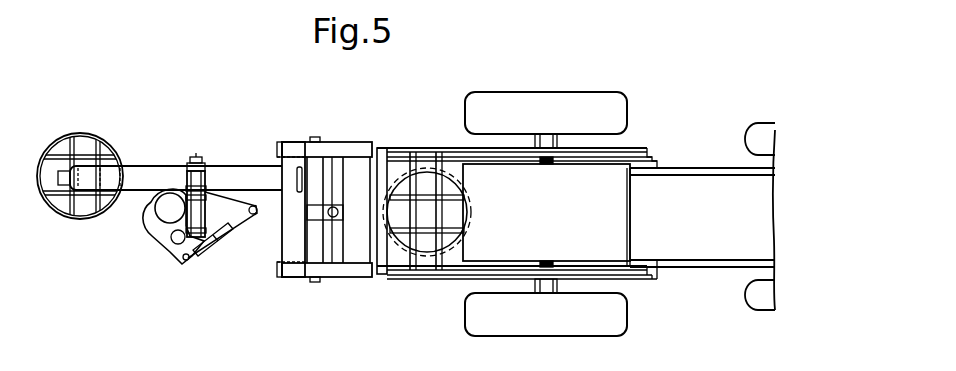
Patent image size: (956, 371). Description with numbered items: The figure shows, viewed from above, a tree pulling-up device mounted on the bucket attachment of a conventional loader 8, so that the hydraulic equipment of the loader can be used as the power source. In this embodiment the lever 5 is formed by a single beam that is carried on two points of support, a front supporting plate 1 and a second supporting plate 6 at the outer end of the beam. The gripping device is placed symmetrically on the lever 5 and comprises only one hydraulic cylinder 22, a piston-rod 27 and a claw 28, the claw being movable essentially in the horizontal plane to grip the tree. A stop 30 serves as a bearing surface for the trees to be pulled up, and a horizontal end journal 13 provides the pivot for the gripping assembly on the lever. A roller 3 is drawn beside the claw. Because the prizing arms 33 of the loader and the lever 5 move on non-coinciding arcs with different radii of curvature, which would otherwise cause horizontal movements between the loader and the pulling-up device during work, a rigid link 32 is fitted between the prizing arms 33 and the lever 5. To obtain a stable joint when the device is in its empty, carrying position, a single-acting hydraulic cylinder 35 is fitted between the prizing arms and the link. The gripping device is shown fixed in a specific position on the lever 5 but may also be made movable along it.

The supporting plate 1 is at (403, 215).
The roller 3 is at (170, 218).
The lever 5 is at (226, 166).
The supporting plate 6 is at (86, 218).
The loader 8 is at (562, 219).
The end journal 13 is at (197, 153).
The hydraulic cylinder 22 is at (229, 226).
The piston-rod 27 is at (203, 249).
The claw 28 is at (168, 233).
The stop 30 is at (187, 175).
The rigid link 32 is at (307, 220).
The prizing arm 33 is at (347, 142).
The single-acting hydraulic cylinder 35 is at (341, 226).